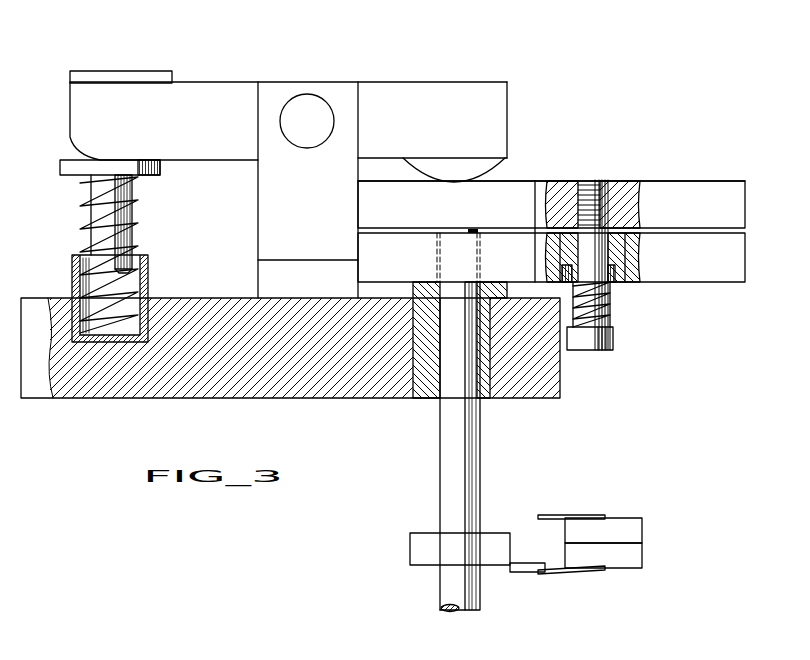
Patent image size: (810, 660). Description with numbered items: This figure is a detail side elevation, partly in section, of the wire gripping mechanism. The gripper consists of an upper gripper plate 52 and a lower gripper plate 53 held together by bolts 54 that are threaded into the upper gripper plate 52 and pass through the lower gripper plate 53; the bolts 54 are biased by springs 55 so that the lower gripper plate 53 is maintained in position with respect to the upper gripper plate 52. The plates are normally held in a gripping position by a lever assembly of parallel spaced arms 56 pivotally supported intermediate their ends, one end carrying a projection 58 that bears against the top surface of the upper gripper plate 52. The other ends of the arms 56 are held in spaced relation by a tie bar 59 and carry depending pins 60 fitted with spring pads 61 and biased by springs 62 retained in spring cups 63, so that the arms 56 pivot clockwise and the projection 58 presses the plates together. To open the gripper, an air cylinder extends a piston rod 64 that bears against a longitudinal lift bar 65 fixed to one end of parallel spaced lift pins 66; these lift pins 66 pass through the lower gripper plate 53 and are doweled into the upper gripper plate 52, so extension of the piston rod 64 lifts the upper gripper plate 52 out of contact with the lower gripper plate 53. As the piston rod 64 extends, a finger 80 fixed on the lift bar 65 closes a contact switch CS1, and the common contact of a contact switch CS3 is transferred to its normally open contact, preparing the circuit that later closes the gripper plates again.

The upper gripper plate 52 is at (668, 186).
The lower gripper plate 53 is at (686, 283).
The bolts 54 is at (587, 351).
The springs 55 is at (612, 305).
The arms 56 is at (190, 90).
The projection 58 is at (500, 160).
The tie bar 59 is at (116, 76).
The depending pins 60 is at (130, 212).
The spring pads 61 is at (160, 170).
The springs 62 is at (85, 205).
The spring cups 63 is at (145, 288).
The piston rod 64 is at (450, 593).
The lift bar 65 is at (410, 555).
The lift pins 66 is at (478, 465).
The finger 80 is at (513, 572).
The contact switch CS1 is at (642, 522).
The contact switch CS3 is at (642, 555).